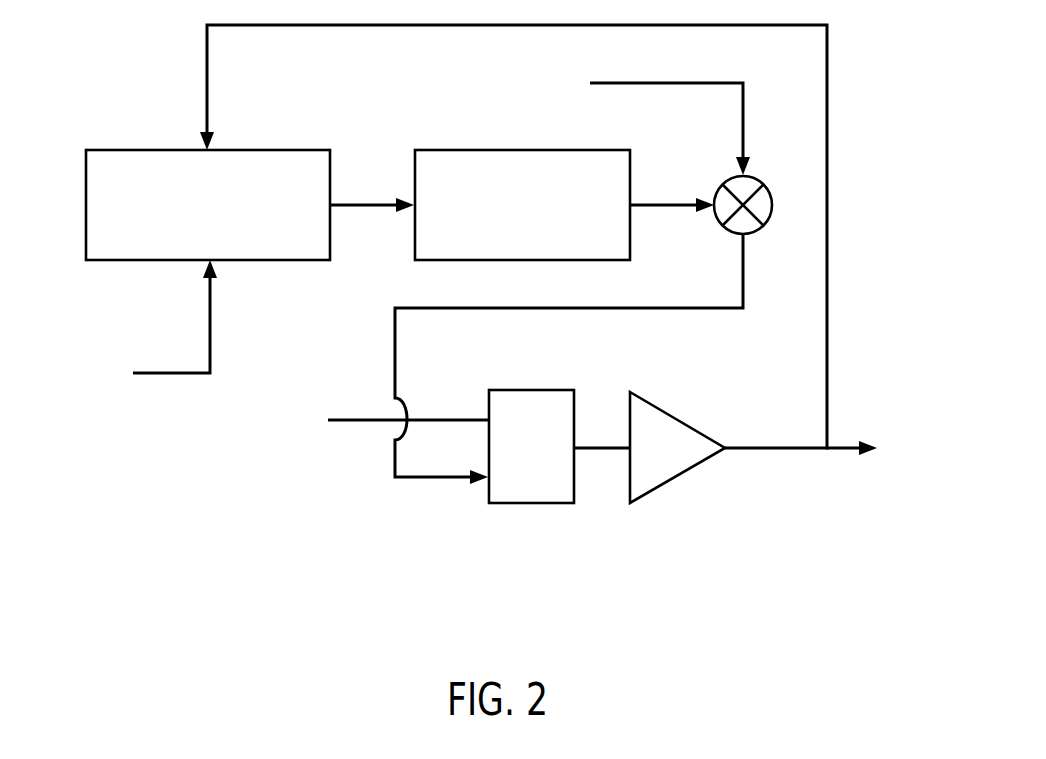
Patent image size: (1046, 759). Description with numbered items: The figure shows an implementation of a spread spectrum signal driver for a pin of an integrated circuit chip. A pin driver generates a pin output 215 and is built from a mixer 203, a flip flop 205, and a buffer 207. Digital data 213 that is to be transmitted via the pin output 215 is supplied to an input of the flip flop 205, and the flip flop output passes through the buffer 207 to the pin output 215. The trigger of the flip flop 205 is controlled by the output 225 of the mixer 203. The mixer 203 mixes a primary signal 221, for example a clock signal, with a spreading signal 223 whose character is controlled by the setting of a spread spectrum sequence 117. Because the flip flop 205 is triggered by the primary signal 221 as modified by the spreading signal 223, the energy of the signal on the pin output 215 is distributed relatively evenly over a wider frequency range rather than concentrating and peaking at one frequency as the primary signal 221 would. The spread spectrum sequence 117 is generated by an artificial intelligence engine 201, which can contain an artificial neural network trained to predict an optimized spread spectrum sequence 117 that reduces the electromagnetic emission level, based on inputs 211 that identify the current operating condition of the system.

The artificial intelligence engine 201 is at (268, 236).
The spread spectrum sequence 117 is at (600, 236).
The primary signal 221 is at (745, 130).
The spreading signal 223 is at (667, 202).
The mixer 203 is at (718, 223).
The output of the mixer 225 is at (722, 310).
The inputs 211 is at (163, 376).
The digital data 213 is at (353, 423).
The flip flop 205 is at (537, 504).
The buffer 207 is at (672, 482).
The pin output 215 is at (783, 450).